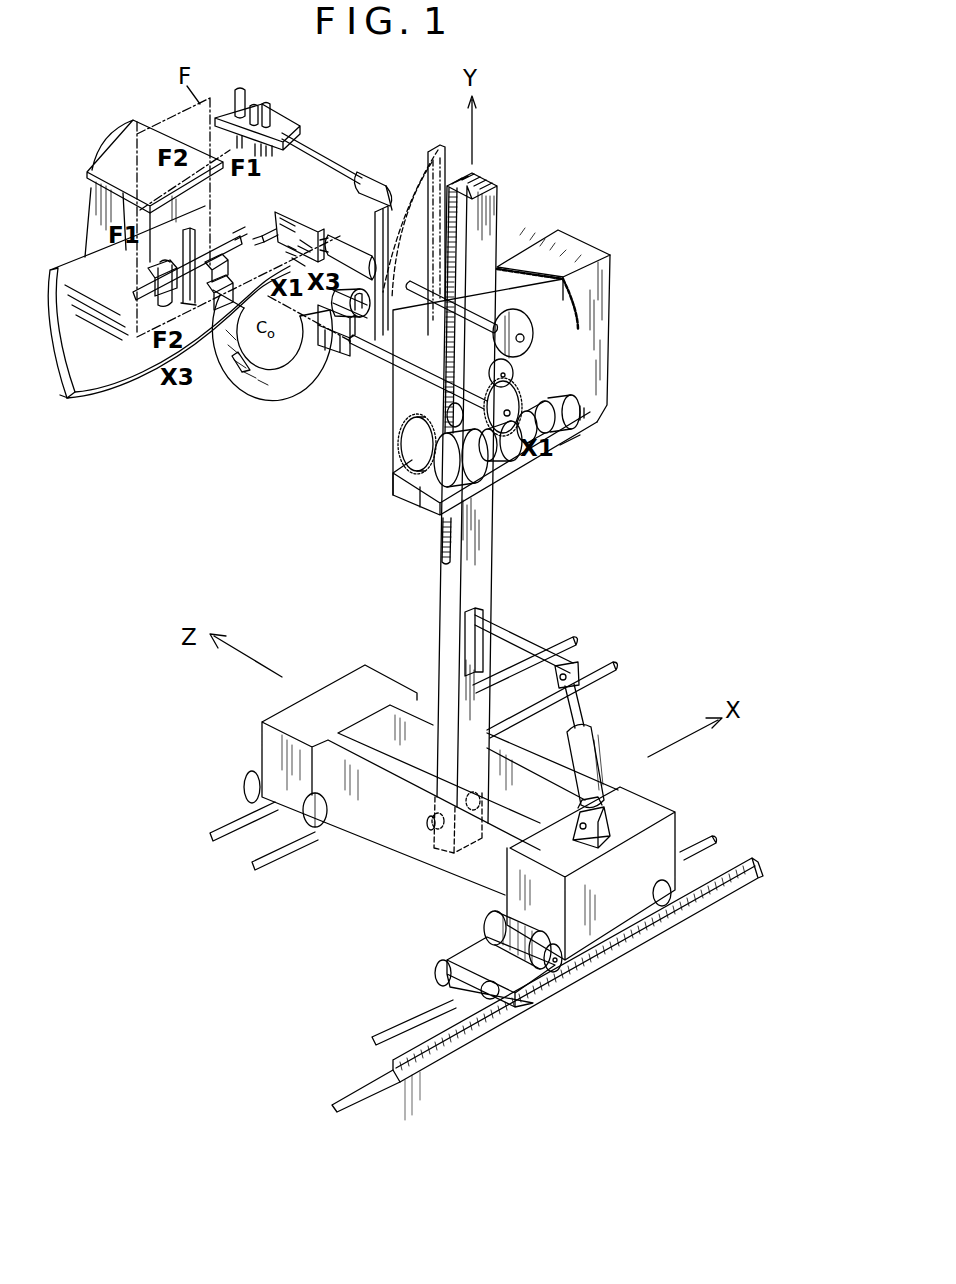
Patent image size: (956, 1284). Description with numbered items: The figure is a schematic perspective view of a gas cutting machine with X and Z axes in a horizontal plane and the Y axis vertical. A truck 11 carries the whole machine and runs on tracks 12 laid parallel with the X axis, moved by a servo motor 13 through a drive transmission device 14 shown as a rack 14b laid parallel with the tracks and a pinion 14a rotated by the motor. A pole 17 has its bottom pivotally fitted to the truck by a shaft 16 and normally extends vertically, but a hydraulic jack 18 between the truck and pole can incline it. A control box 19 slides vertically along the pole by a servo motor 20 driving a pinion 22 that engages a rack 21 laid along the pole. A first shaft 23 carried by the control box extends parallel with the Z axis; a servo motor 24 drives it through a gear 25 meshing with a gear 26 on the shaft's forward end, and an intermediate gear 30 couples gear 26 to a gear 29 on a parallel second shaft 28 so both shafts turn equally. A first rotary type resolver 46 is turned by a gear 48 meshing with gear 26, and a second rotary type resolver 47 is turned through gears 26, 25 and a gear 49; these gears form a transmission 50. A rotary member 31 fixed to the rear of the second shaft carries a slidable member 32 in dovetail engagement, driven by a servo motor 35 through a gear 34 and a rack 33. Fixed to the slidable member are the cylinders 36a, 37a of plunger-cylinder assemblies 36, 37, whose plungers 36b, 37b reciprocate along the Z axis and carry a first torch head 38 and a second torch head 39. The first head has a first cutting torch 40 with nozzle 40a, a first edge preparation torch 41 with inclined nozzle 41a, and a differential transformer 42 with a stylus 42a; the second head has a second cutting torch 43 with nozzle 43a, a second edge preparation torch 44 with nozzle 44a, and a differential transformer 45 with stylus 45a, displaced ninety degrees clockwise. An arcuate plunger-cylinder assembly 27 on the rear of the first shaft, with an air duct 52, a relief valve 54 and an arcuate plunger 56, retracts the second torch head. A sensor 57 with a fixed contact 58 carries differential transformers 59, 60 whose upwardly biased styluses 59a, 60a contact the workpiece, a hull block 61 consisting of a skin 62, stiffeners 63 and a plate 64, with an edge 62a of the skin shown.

The truck 11 is at (508, 868).
The tracks 12 is at (553, 648).
The servo motor 13 is at (492, 932).
The drive transmission device 14 is at (612, 985).
The pinion 14a is at (560, 975).
The rack 14b is at (540, 985).
The shaft 16 is at (427, 822).
The pole 17 is at (483, 520).
The hydraulic jack 18 is at (590, 760).
The control box 19 is at (608, 312).
The servo motor 20 is at (485, 475).
The rack 21 is at (441, 540).
The pinion 22 is at (398, 448).
The first shaft 23 is at (418, 370).
The servo motor 24 is at (570, 448).
The gear 25 is at (530, 400).
The gear 26 is at (490, 392).
The arcuate plunger-cylinder assembly 27 is at (235, 390).
The second shaft 28 is at (470, 320).
The gear 29 is at (528, 325).
The intermediate gear 30 is at (493, 362).
The rotary member 31 is at (436, 150).
The slidable member 32 is at (426, 232).
The rack 33 is at (385, 210).
The gear 34 is at (350, 328).
The servo motor 35 is at (326, 345).
The plunger-cylinder assembly 36 is at (366, 170).
The cylinder 36a is at (380, 180).
The plunger 36b is at (322, 160).
The plunger-cylinder assembly 37 is at (405, 258).
The cylinder 37a is at (348, 250).
The plunger 37b is at (330, 238).
The first torch head 38 is at (278, 120).
The second torch head 39 is at (282, 220).
The first cutting torch 40 is at (270, 102).
The nozzle 40a is at (276, 154).
The first edge preparation torch 41 is at (254, 104).
The nozzle 41a is at (258, 157).
The differential transformer 42 is at (236, 92).
The stylus 42a is at (236, 140).
The second cutting torch 43 is at (322, 228).
The nozzle 43a is at (296, 262).
The second edge preparation torch 44 is at (305, 236).
The nozzle 44a is at (286, 250).
The differential transformer 45 is at (262, 232).
The stylus 45a is at (256, 238).
The first rotary type resolver 46 is at (513, 468).
The second rotary type resolver 47 is at (584, 412).
The gear 48 is at (449, 412).
The gear 49 is at (566, 396).
The transmission 50 is at (602, 236).
The air duct 52 is at (322, 352).
The relief valve 54 is at (300, 340).
The plunger 56 is at (230, 362).
The sensor 57 is at (162, 296).
The fixed contact 58 is at (212, 306).
The differential transformer 59 is at (230, 266).
The stylus 59a is at (250, 240).
The differential transformer 60 is at (147, 290).
The stylus 60a is at (182, 268).
The hull block 61 is at (121, 395).
The skin 62 is at (77, 366).
The sheet corner 62a is at (82, 403).
The stiffeners 63 is at (97, 207).
The plate 64 is at (107, 152).